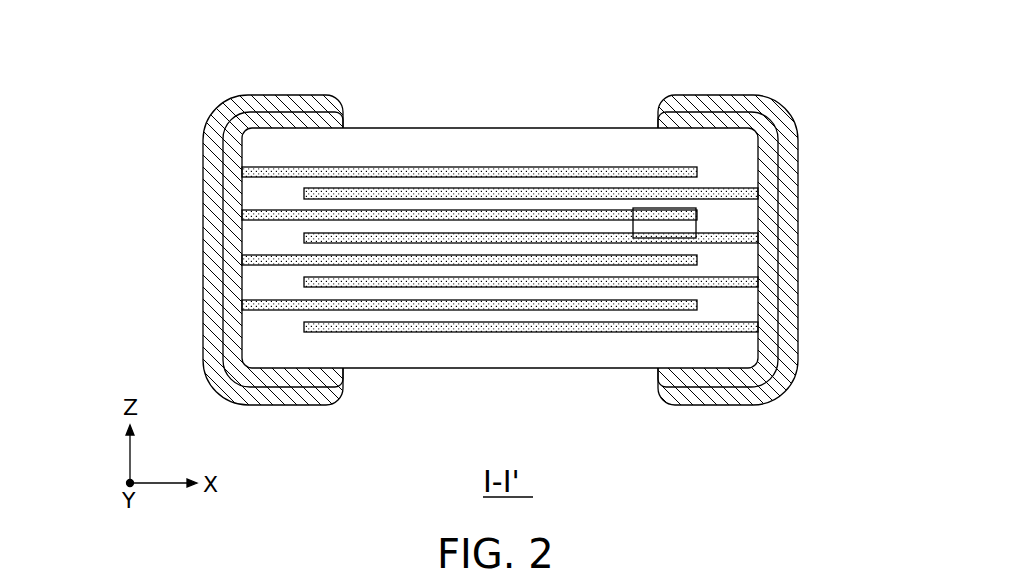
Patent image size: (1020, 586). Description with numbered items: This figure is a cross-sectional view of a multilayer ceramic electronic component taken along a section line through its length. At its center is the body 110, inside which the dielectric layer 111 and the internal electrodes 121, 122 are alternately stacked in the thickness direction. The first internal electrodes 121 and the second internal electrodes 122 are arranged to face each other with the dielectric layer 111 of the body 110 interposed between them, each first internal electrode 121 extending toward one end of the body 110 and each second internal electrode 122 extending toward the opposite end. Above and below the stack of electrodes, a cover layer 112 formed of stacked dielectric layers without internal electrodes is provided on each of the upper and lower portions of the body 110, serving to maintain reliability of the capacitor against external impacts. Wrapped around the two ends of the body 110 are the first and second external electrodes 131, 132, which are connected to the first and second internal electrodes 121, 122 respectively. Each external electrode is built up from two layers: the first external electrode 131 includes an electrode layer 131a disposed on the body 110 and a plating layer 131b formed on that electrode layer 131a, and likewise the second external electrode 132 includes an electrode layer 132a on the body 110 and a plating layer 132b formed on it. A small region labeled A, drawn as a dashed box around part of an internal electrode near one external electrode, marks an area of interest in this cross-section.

The body 110 is at (428, 127).
The dielectric layer 111 is at (372, 205).
The cover layer 112 is at (507, 145).
The first internal electrode 121 is at (573, 167).
The second internal electrode 122 is at (638, 192).
The first external electrode 131 is at (193, 250).
The electrode layer 131a is at (233, 182).
The plating layer 131b is at (213, 212).
The second external electrode 132 is at (808, 250).
The electrode layer 132a is at (773, 153).
The plating layer 132b is at (790, 180).
The enlarged region A is at (697, 226).